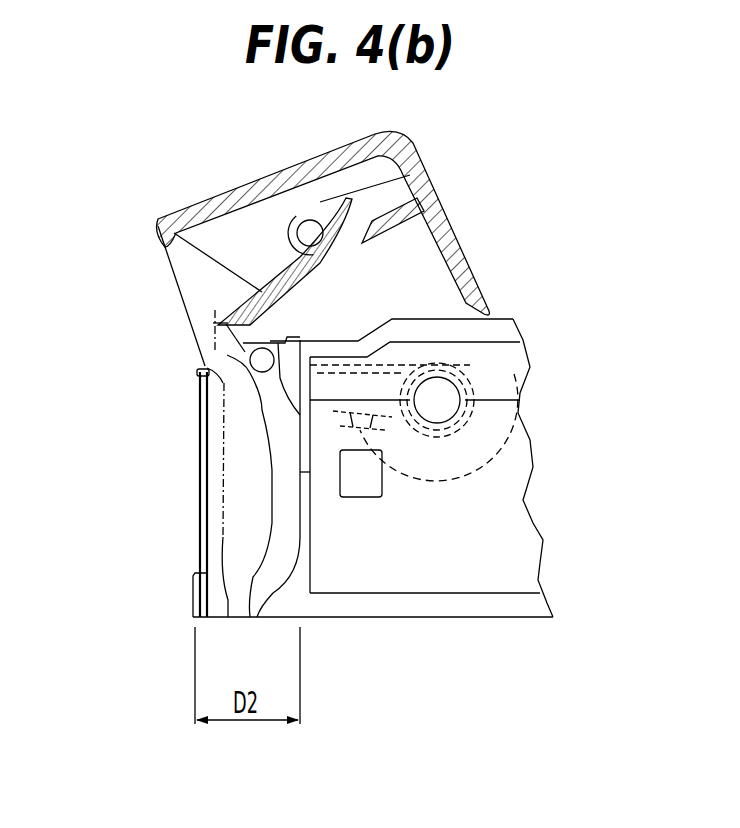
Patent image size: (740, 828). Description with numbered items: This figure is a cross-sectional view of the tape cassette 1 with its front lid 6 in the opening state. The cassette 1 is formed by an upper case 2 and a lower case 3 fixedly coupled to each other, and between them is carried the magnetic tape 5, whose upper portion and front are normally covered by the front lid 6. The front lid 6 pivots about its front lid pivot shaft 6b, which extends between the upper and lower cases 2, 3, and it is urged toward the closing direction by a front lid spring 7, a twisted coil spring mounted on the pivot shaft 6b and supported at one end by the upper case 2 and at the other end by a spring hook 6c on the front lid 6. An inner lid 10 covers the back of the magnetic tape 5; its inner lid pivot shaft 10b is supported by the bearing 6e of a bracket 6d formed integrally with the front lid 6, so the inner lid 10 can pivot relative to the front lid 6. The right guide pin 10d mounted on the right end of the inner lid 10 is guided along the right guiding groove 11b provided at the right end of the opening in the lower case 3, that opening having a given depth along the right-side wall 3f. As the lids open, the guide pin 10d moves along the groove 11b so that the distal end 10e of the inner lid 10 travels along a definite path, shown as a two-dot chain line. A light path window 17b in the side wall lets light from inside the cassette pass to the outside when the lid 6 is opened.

The tape cassette 1 is at (629, 689).
The upper case 2 is at (513, 319).
The lower case 3 is at (477, 610).
The right-side wall 3f is at (230, 567).
The magnetic tape 5 is at (199, 497).
The front lid 6 is at (283, 170).
The front lid pivot shaft 6b is at (447, 400).
The spring hook 6c is at (330, 415).
The bracket 6d is at (403, 187).
The bearing 6e is at (297, 219).
The front lid spring 7 is at (312, 415).
The inner lid 10 is at (158, 217).
The inner lid pivot shaft 10b is at (310, 221).
The right guide pin 10d is at (250, 359).
The distal end 10e is at (213, 323).
The right guiding groove 11b is at (255, 590).
The light path window 17b is at (353, 497).